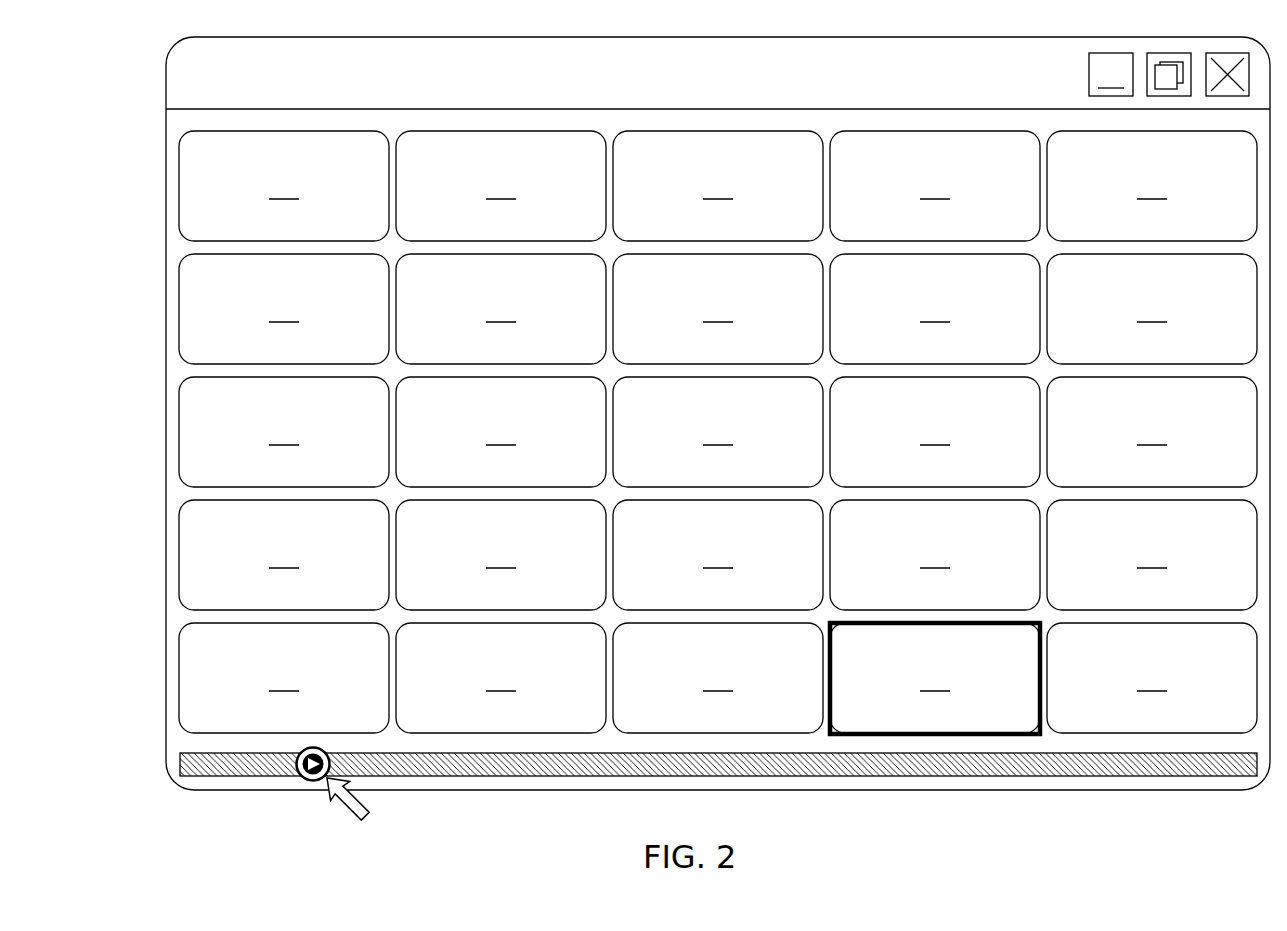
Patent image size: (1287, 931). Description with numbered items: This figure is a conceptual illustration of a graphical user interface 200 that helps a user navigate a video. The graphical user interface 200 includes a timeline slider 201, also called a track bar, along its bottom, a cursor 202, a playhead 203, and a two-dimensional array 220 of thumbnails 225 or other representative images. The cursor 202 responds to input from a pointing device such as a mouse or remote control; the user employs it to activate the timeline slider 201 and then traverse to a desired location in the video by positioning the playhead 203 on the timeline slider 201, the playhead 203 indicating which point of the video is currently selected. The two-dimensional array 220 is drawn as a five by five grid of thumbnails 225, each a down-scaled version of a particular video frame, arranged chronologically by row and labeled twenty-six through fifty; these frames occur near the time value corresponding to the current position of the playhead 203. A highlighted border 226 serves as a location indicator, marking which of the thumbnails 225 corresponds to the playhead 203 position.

The graphical user interface 200 is at (755, 69).
The timeline slider 201 is at (620, 777).
The cursor 202 is at (369, 819).
The playhead 203 is at (311, 781).
The two-dimensional array 220 is at (166, 242).
The thumbnails 225 is at (180, 304).
The highlighted border 226 is at (952, 735).